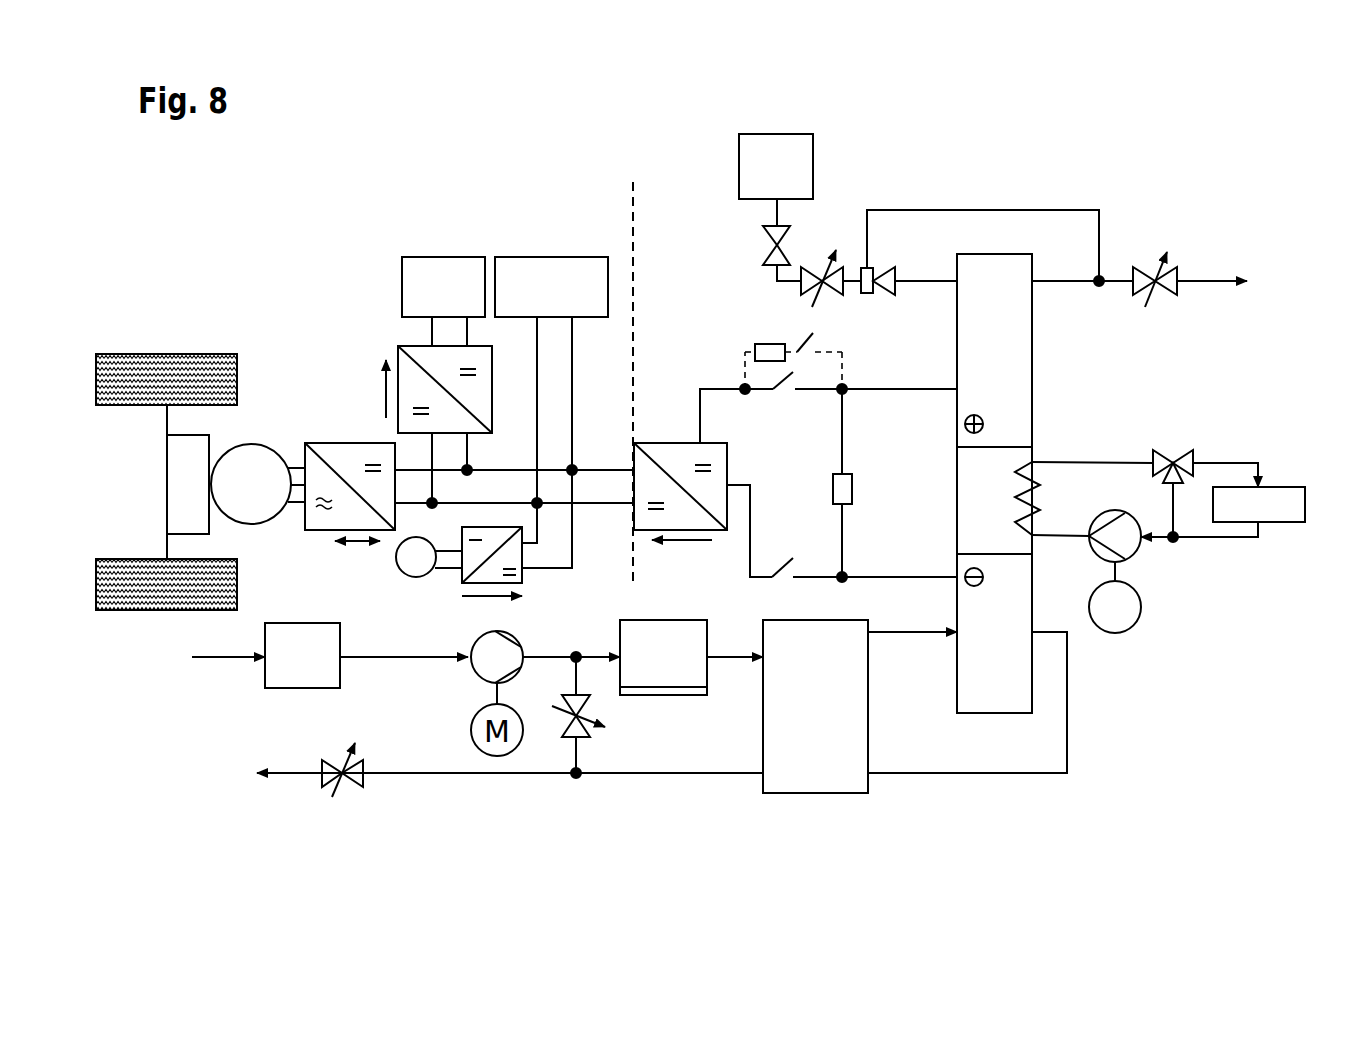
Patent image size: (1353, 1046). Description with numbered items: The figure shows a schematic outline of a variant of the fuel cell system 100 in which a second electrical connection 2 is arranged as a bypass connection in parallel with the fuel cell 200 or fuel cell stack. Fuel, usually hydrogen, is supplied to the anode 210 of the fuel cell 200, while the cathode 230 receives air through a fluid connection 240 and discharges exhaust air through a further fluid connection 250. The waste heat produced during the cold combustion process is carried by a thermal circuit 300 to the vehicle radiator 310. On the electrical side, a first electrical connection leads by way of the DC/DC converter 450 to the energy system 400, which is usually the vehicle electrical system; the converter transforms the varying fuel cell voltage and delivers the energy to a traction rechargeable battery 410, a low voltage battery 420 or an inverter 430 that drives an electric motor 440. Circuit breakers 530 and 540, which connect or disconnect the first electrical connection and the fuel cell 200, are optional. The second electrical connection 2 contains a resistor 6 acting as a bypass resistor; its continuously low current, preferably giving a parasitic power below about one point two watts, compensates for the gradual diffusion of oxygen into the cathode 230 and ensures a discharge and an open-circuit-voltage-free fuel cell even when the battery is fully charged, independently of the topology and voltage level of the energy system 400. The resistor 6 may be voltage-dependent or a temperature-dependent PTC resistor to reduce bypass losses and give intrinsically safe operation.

The fuel cell system 100 is at (1103, 177).
The second electrical connection 2 is at (846, 435).
The resistor 6 is at (853, 490).
The fuel cell 200 is at (1130, 327).
The anode 210 is at (1033, 353).
The cathode 230 is at (1033, 600).
The fluid connection 240 is at (903, 634).
The further fluid connection 250 is at (1007, 775).
The thermal circuit 300 is at (1113, 460).
The vehicle radiator 310 is at (1284, 523).
The energy system 400 is at (497, 205).
The traction rechargeable battery 410 is at (553, 257).
The low voltage battery 420 is at (445, 257).
The inverter 430 is at (342, 443).
The electric motor 440 is at (267, 444).
The DC/DC converter 450 is at (672, 443).
The circuit breaker 530 is at (775, 378).
The circuit breaker 540 is at (787, 557).